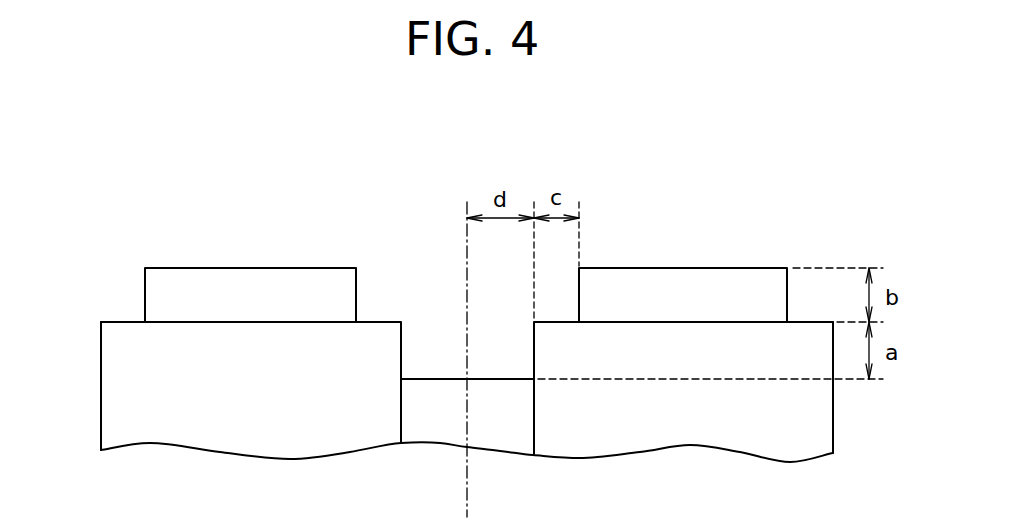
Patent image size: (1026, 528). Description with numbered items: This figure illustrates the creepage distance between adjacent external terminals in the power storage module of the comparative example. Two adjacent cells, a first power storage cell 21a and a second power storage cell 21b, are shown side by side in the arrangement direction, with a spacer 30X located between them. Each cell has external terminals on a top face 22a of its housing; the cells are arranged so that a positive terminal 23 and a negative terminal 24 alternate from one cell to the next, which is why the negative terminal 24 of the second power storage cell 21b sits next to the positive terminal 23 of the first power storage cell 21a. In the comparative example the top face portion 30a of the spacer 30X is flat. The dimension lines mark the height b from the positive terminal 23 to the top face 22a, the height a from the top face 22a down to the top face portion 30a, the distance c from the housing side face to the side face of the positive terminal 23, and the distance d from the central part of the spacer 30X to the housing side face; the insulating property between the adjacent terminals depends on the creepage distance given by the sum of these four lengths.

The first power storage cell 21a is at (833, 420).
The second power storage cell 21b is at (101, 398).
The top face of the housing 22a is at (123, 321).
The positive terminal 23 is at (686, 266).
The negative terminal 24 is at (249, 266).
The spacer 30X is at (438, 395).
The top face portion 30a is at (500, 378).